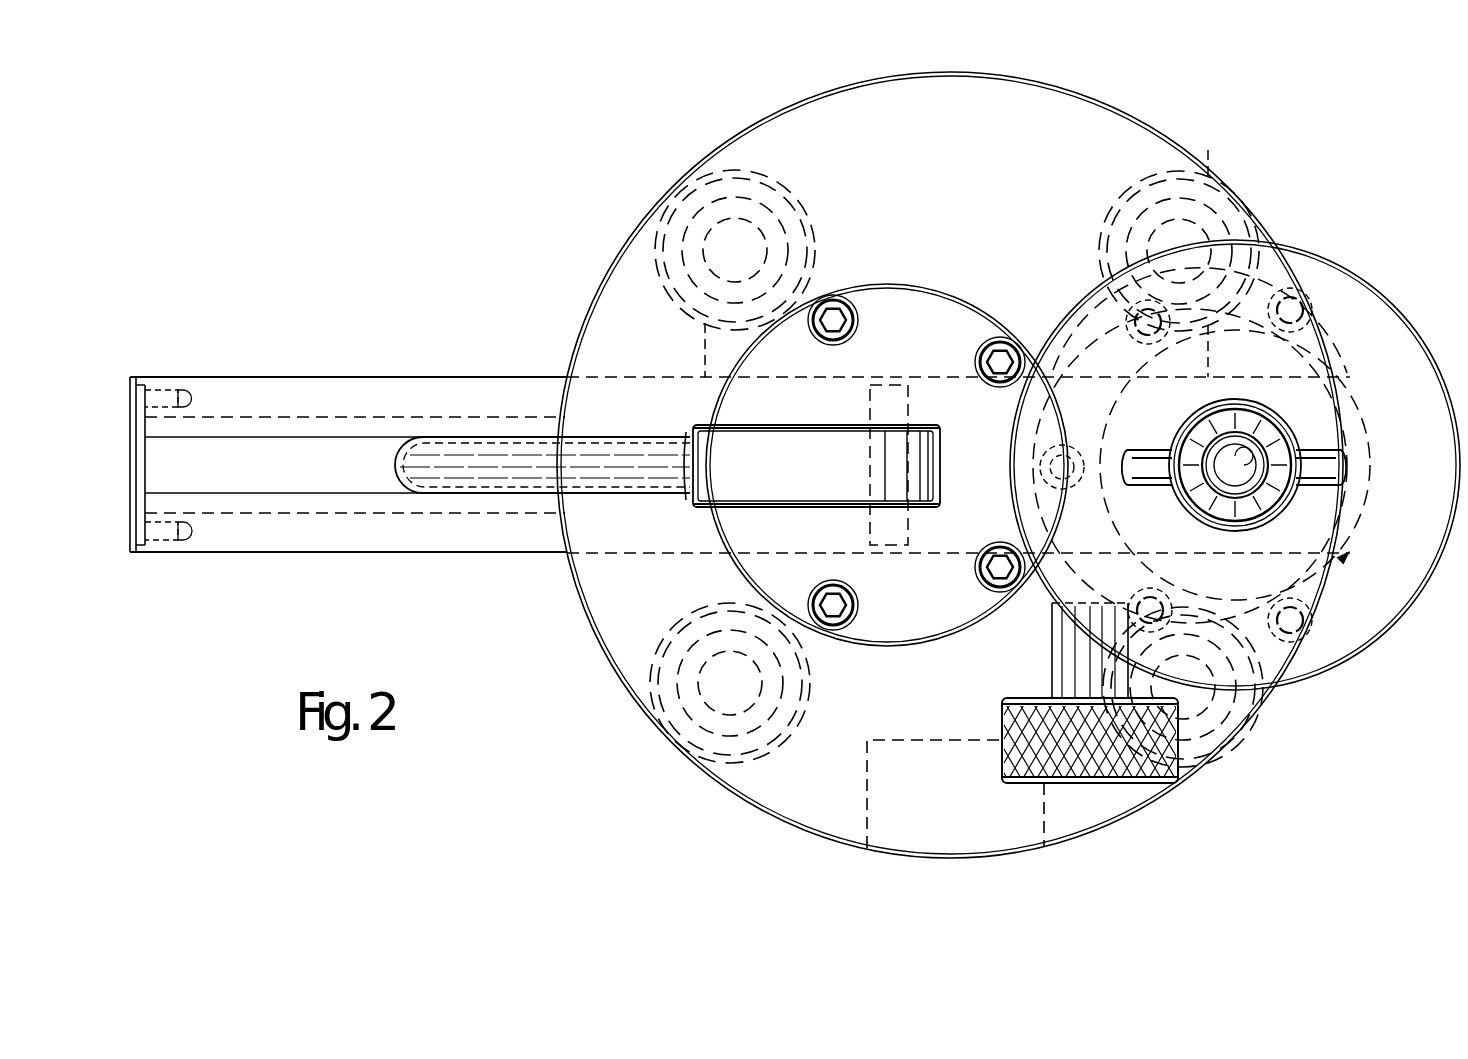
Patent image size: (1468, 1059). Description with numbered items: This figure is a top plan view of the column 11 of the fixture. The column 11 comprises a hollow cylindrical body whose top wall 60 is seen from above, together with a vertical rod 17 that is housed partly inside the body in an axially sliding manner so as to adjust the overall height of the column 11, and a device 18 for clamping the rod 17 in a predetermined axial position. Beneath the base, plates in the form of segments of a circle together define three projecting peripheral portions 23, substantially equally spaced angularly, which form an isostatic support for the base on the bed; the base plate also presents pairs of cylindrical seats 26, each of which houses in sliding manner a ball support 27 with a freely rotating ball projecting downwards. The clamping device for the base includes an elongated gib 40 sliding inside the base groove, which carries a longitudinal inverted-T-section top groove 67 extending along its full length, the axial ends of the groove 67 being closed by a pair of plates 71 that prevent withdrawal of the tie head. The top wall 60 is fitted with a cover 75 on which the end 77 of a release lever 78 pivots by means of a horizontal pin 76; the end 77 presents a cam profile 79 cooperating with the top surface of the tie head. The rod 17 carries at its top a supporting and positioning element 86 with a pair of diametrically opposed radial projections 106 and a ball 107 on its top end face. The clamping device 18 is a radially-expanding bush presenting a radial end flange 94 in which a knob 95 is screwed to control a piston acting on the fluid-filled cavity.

The column 11 is at (660, 172).
The top wall 60 is at (1100, 147).
The ball support 27 is at (735, 250).
The cylindrical seat 26 is at (655, 238).
The projecting peripheral portion 23 is at (607, 322).
The clamping device for rod 18 is at (1390, 300).
The cover 75 is at (900, 330).
The gib 40 is at (322, 410).
The plate 71 is at (143, 410).
The top groove 67 is at (250, 478).
The lever 78 is at (712, 480).
The horizontal pin 76 is at (870, 405).
The end of lever 77 is at (915, 480).
The cam profile 79 is at (940, 478).
The vertical rod 17 is at (1180, 430).
The ball 107 is at (1262, 450).
The radial projection 106 is at (1162, 470).
The supporting and positioning element 86 is at (1240, 505).
The radial end flange 94 is at (1350, 635).
The knob 95 is at (1137, 790).